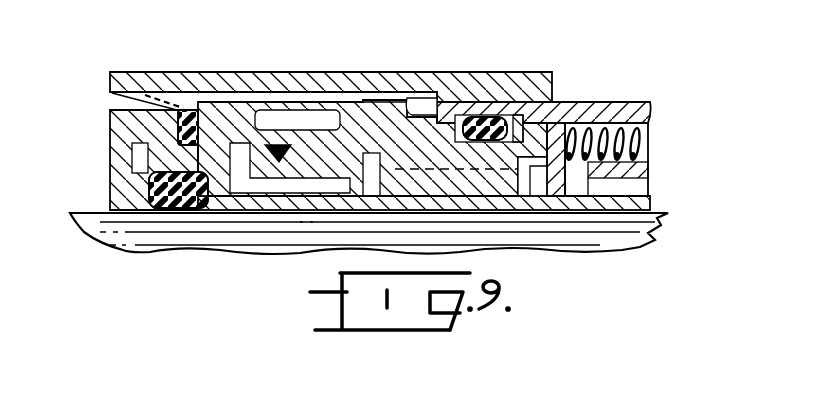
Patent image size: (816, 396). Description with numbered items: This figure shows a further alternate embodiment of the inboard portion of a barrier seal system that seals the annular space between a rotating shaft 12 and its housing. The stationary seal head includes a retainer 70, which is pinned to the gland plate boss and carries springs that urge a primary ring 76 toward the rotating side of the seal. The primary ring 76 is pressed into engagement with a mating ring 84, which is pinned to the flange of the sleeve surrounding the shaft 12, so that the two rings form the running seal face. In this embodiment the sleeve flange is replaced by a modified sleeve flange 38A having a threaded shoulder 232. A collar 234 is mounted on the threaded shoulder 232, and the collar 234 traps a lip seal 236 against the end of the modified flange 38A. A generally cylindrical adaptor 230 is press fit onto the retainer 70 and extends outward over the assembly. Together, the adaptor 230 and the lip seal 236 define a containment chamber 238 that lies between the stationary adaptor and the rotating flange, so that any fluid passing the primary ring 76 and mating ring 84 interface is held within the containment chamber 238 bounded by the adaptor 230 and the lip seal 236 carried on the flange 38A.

The rotating shaft 12 is at (637, 238).
The modified sleeve flange 38A is at (158, 150).
The retainer 70 is at (630, 107).
The primary ring 76 is at (448, 125).
The mating ring 84 is at (323, 166).
The adaptor 230 is at (512, 75).
The threaded shoulder 232 is at (146, 177).
The collar 234 is at (122, 127).
The lip seal 236 is at (188, 112).
The containment chamber 238 is at (243, 92).